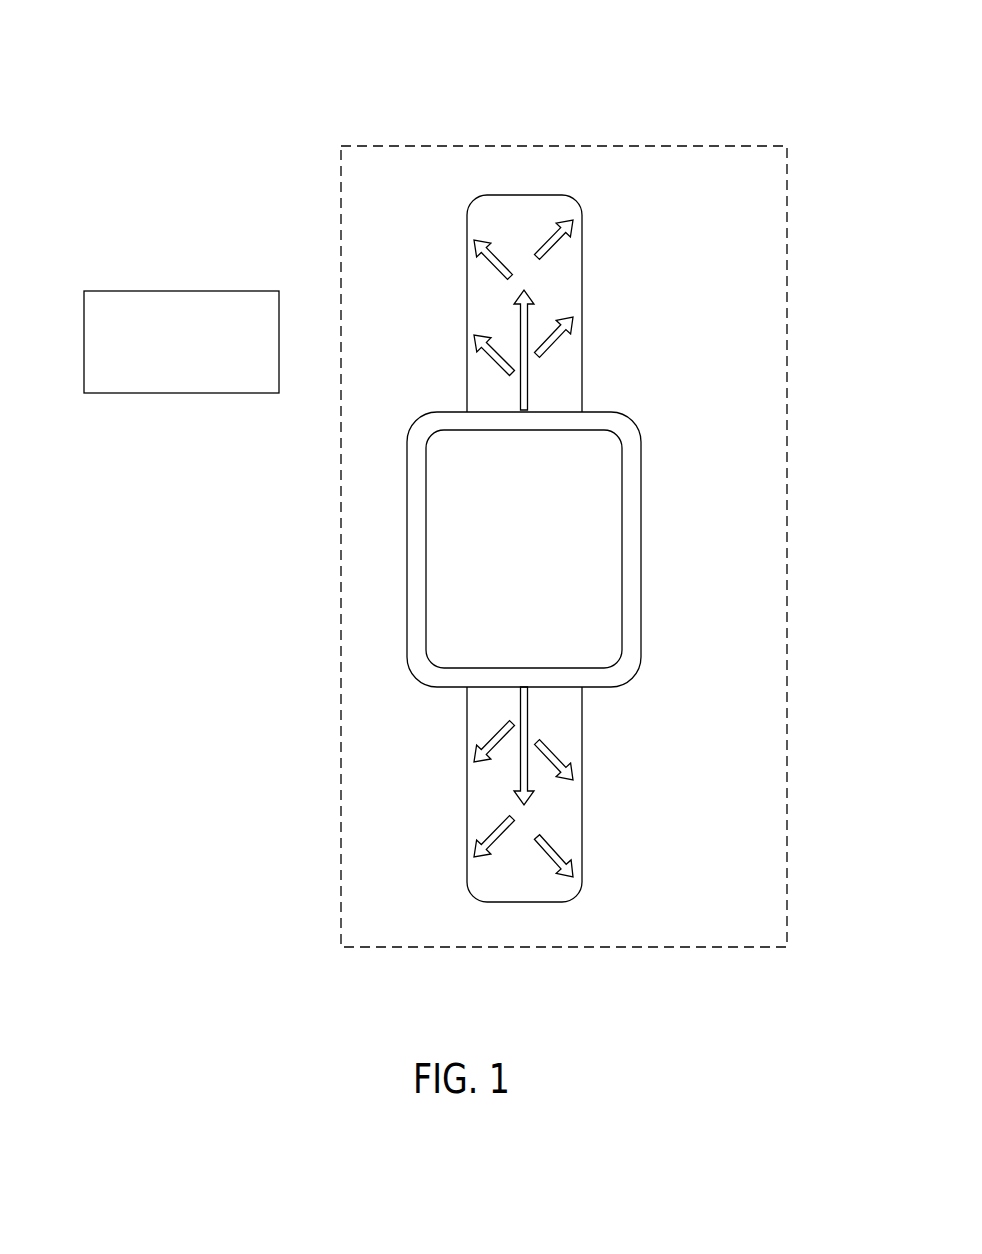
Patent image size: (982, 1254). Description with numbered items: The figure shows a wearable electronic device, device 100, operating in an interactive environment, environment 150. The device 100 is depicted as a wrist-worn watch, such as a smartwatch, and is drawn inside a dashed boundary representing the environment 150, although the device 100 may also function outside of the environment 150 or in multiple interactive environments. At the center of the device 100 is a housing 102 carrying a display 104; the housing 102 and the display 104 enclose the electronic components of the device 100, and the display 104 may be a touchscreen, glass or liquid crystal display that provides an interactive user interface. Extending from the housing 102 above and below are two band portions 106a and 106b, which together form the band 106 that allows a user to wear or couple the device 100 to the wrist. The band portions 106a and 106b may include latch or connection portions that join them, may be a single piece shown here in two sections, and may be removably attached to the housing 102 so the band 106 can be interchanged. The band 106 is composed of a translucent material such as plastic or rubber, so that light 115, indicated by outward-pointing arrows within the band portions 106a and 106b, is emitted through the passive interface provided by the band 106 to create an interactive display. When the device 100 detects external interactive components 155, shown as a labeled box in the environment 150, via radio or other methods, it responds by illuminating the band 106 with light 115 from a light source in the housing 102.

The device 100 is at (775, 936).
The housing 102 is at (641, 490).
The display 104 is at (543, 560).
The band 106 is at (614, 548).
The band portion 106a is at (583, 290).
The band portion 106b is at (583, 783).
The light 115 is at (518, 313).
The environment 150 is at (663, 52).
The external interactive components 155 is at (123, 290).